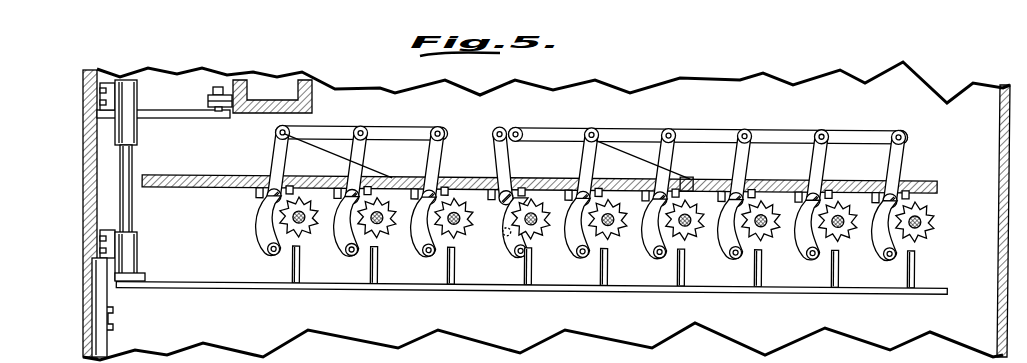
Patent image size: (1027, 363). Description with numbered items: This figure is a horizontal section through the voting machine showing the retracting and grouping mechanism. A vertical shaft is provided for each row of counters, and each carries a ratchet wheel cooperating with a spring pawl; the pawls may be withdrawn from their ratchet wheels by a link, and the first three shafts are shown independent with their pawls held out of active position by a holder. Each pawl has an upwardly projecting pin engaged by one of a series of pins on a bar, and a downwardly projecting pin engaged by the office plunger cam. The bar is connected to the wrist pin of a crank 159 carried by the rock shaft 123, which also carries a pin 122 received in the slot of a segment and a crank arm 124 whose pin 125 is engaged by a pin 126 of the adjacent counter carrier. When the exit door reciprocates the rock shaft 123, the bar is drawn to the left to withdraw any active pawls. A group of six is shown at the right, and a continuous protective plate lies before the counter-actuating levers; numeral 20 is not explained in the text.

The casing wall 20 is at (80, 188).
The pin 122 is at (108, 272).
The rock shaft 123 is at (137, 157).
The crank arm 124 is at (200, 118).
The pin 125 is at (220, 87).
The pin 126 is at (208, 98).
The crank 159 is at (138, 277).